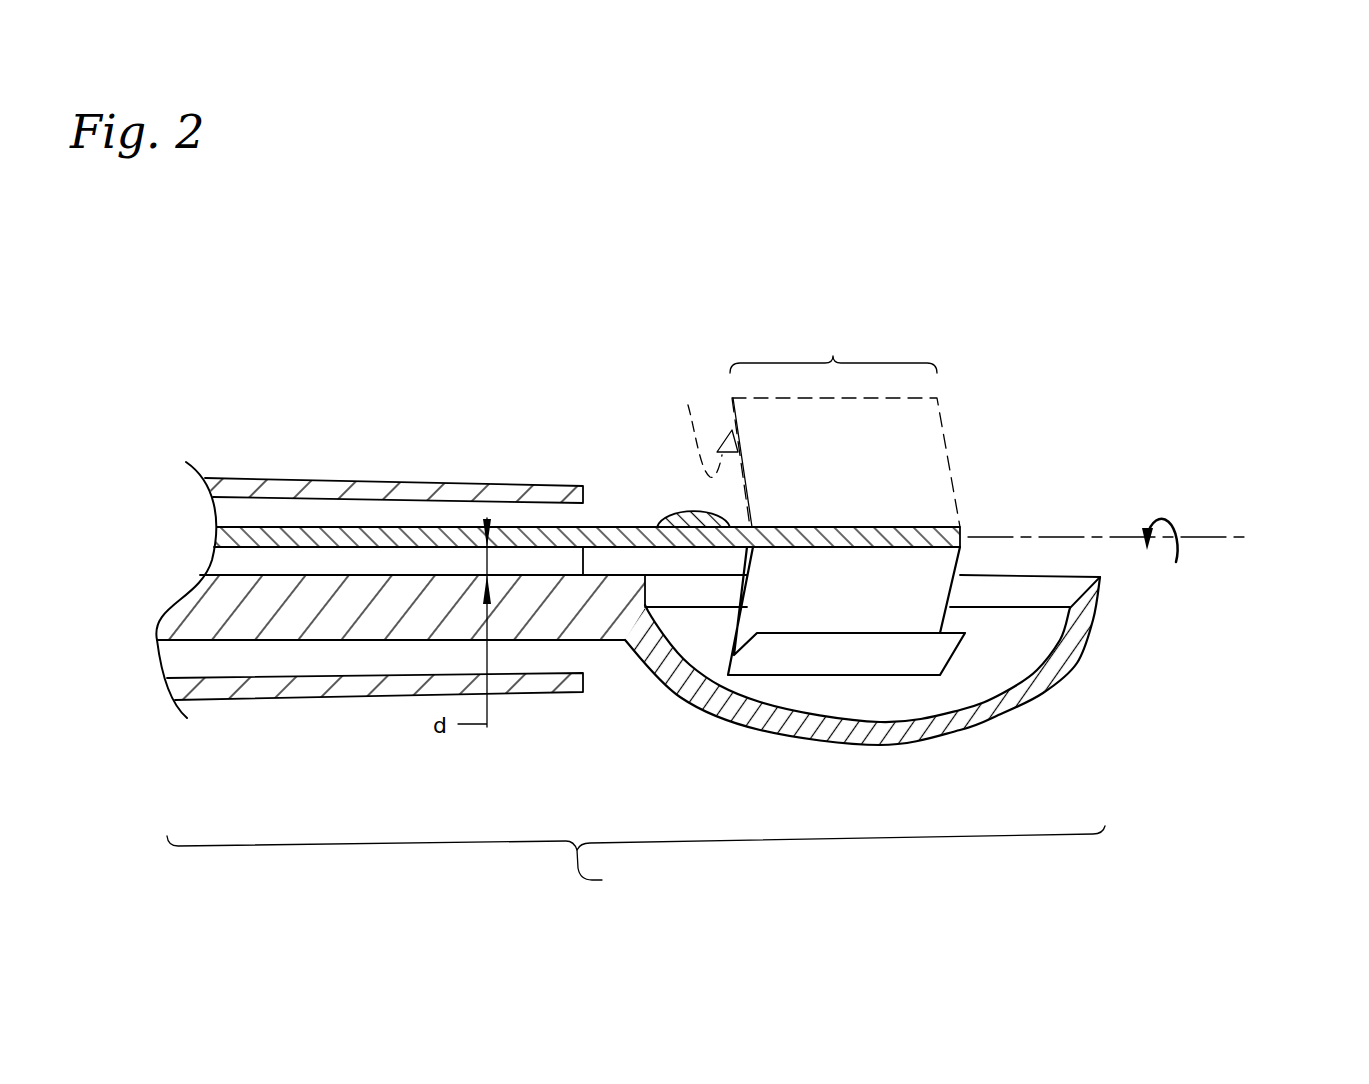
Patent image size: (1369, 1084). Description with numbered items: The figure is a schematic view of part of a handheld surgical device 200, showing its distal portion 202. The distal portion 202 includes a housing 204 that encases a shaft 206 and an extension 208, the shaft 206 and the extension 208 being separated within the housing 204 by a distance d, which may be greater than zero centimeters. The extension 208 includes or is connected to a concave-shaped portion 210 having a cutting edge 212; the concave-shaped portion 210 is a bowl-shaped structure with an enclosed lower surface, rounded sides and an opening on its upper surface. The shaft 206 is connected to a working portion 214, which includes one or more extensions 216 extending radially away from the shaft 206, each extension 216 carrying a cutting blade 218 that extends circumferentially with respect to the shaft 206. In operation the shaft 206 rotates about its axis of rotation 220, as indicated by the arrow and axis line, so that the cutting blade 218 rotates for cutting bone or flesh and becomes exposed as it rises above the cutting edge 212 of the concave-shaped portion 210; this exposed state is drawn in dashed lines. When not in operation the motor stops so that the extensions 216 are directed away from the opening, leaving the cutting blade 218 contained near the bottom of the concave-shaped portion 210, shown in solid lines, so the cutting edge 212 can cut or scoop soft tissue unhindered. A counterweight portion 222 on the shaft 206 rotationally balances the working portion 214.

The handheld surgical device 200 is at (443, 325).
The distal portion 202 is at (636, 862).
The housing 204 is at (376, 480).
The shaft 206 is at (318, 527).
The extension 208 is at (407, 640).
The concave-shaped portion 210 is at (918, 745).
The cutting edge 212 is at (1100, 577).
The working portion 214 is at (833, 356).
The extension 216 is at (943, 422).
The cutting blade 218 is at (688, 405).
The axis of rotation 220 is at (1218, 535).
The counterweight portion 222 is at (675, 508).